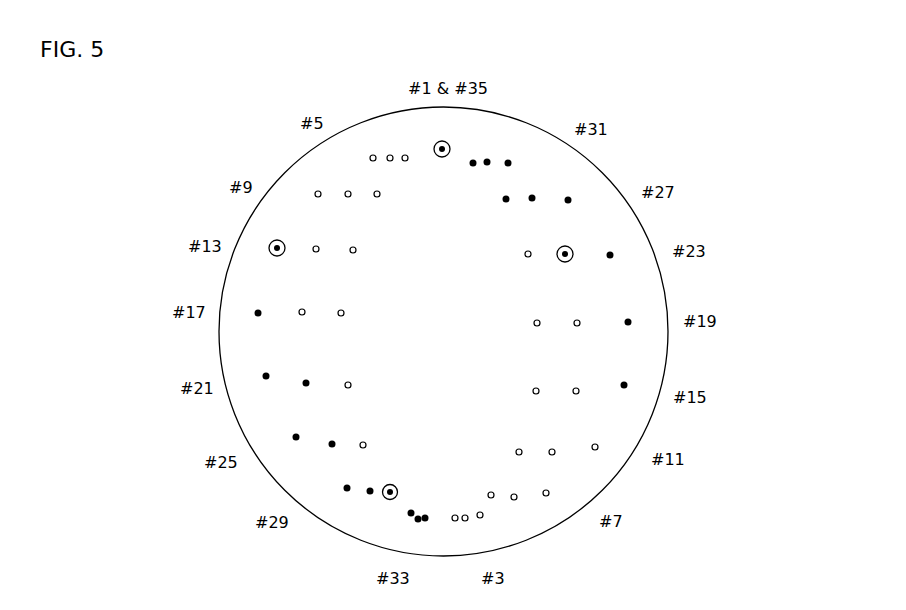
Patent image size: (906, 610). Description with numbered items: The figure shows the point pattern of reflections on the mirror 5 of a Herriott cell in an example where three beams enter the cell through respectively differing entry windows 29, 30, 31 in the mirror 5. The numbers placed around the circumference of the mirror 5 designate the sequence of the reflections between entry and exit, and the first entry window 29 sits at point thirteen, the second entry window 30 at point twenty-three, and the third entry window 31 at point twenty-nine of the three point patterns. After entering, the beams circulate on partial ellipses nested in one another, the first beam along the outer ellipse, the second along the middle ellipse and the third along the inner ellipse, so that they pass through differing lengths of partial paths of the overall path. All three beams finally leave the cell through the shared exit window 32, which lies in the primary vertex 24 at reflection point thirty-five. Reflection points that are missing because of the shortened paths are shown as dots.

The mirror 5 is at (721, 212).
The primary vertex 24 is at (440, 157).
The shared exit window 32 is at (445, 157).
The entry window 29 is at (282, 256).
The entry window 30 is at (561, 262).
The entry window 31 is at (396, 485).